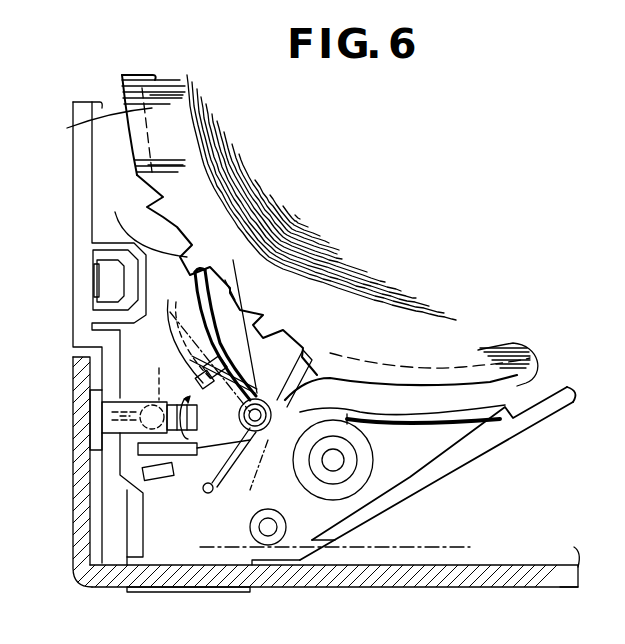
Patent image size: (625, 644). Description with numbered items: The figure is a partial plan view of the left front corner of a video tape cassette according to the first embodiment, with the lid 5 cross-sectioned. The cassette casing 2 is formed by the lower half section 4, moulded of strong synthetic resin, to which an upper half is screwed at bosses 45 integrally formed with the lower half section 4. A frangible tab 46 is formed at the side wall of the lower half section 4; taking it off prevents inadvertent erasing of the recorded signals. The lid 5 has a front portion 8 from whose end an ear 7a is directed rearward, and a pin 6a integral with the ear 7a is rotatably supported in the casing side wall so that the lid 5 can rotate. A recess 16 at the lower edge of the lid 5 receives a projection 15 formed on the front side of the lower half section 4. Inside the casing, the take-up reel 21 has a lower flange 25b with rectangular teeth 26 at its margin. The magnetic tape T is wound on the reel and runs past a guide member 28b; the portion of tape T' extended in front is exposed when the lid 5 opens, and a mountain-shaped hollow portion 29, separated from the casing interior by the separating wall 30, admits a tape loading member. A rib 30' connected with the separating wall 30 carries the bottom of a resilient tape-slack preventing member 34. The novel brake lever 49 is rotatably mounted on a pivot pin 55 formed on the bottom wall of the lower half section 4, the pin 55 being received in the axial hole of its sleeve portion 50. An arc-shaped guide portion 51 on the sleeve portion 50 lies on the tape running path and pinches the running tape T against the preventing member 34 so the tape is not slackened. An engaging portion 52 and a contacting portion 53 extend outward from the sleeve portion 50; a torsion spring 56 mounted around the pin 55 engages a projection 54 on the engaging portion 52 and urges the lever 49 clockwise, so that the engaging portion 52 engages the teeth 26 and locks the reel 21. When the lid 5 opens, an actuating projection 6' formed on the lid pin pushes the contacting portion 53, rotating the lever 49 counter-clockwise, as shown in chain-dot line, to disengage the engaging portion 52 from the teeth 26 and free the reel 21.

The cassette casing 2 is at (50, 197).
The lower half section 4 is at (82, 227).
The lid 5 is at (482, 597).
The pin 6a is at (110, 417).
The actuating projection 6' is at (161, 370).
The ear 7a is at (80, 510).
The front portion 8 is at (412, 587).
The projection 15 is at (200, 592).
The recess 16 is at (135, 578).
The take-up reel 21 is at (320, 181).
The lower flange 25b is at (103, 125).
The rectangular teeth 26 is at (147, 212).
The guide member 28b is at (275, 540).
The mountain-shaped hollow portion 29 is at (560, 498).
The separating wall 30 is at (437, 473).
The rib 30' is at (434, 375).
The tape-slack preventing member 34 is at (318, 393).
The boss 45 is at (372, 455).
The frangible tab 46 is at (110, 278).
The brake lever 49 is at (250, 460).
The sleeve portion 50 is at (240, 420).
The arc-shaped guide portion 51 is at (272, 400).
The engaging portion 52 is at (232, 297).
The contacting portion 53 is at (160, 455).
The projection 54 is at (215, 340).
The pivot pin 55 is at (283, 347).
The torsion spring 56 is at (202, 490).
The magnetic tape T is at (169, 130).
The magnetic tape T' is at (353, 529).